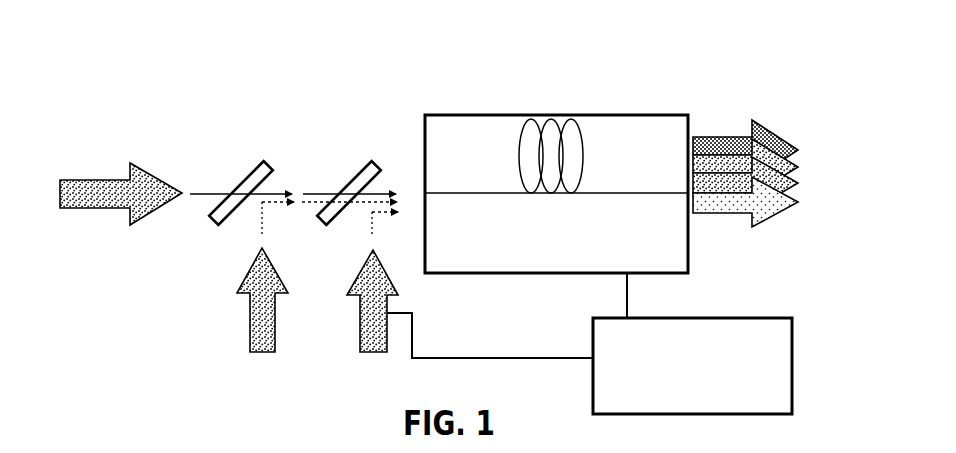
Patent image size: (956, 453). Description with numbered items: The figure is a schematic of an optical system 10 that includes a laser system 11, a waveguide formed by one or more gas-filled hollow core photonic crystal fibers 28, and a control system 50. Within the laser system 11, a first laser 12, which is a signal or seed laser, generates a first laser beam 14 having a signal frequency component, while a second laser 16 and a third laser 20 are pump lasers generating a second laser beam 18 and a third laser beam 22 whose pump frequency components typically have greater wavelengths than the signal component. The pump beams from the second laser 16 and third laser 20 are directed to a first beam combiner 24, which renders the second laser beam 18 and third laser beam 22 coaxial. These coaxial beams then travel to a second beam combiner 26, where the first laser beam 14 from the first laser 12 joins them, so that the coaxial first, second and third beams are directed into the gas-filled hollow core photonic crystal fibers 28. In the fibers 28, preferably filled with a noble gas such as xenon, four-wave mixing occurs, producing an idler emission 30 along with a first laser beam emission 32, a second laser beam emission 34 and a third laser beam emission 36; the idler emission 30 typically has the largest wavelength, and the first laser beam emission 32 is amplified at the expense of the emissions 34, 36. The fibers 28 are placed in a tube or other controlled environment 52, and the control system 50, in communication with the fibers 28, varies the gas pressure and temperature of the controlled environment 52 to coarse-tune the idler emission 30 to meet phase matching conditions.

The optical system 10 is at (556, 141).
The laser system 11 is at (281, 136).
The first laser 12 is at (360, 316).
The first laser beam 14 is at (373, 228).
The second laser 16 is at (106, 182).
The second laser beam 18 is at (220, 192).
The third laser 20 is at (250, 318).
The third laser beam 22 is at (264, 228).
The first beam combiner 24 is at (255, 178).
The second beam combiner 26 is at (362, 178).
The gas-filled hollow core photonic crystal fibers 28 is at (532, 145).
The idler emission 30 is at (796, 198).
The first laser beam emission 32 is at (786, 143).
The second laser beam emission 34 is at (796, 163).
The third laser beam emission 36 is at (796, 180).
The control system 50 is at (792, 360).
The controlled environment 52 is at (664, 114).